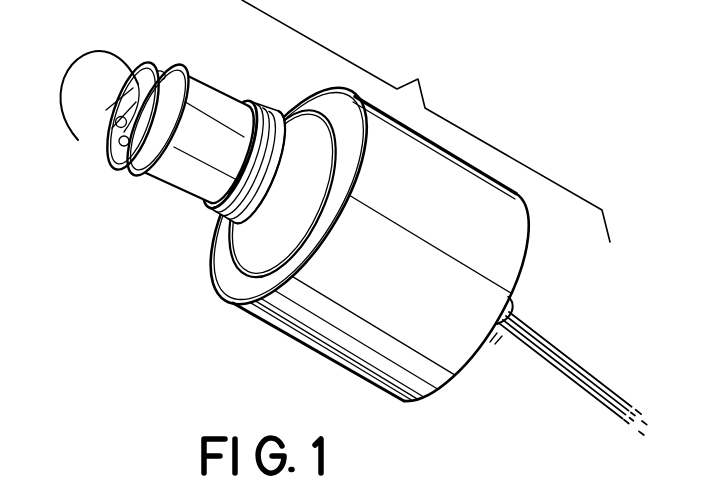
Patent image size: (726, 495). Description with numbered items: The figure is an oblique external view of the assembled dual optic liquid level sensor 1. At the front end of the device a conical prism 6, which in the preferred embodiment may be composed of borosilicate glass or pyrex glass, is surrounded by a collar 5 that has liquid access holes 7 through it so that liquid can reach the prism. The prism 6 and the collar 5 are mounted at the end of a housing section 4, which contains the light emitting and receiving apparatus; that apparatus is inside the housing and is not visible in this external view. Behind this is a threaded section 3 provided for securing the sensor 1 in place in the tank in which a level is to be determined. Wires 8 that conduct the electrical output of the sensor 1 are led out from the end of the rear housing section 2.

The sensor 1 is at (426, 121).
The housing section 2 is at (483, 168).
The threaded section 3 is at (274, 112).
The housing section 4 is at (233, 92).
The collar 5 is at (158, 74).
The conical prism 6 is at (127, 112).
The liquid access holes 7 is at (120, 133).
The wires 8 is at (563, 372).